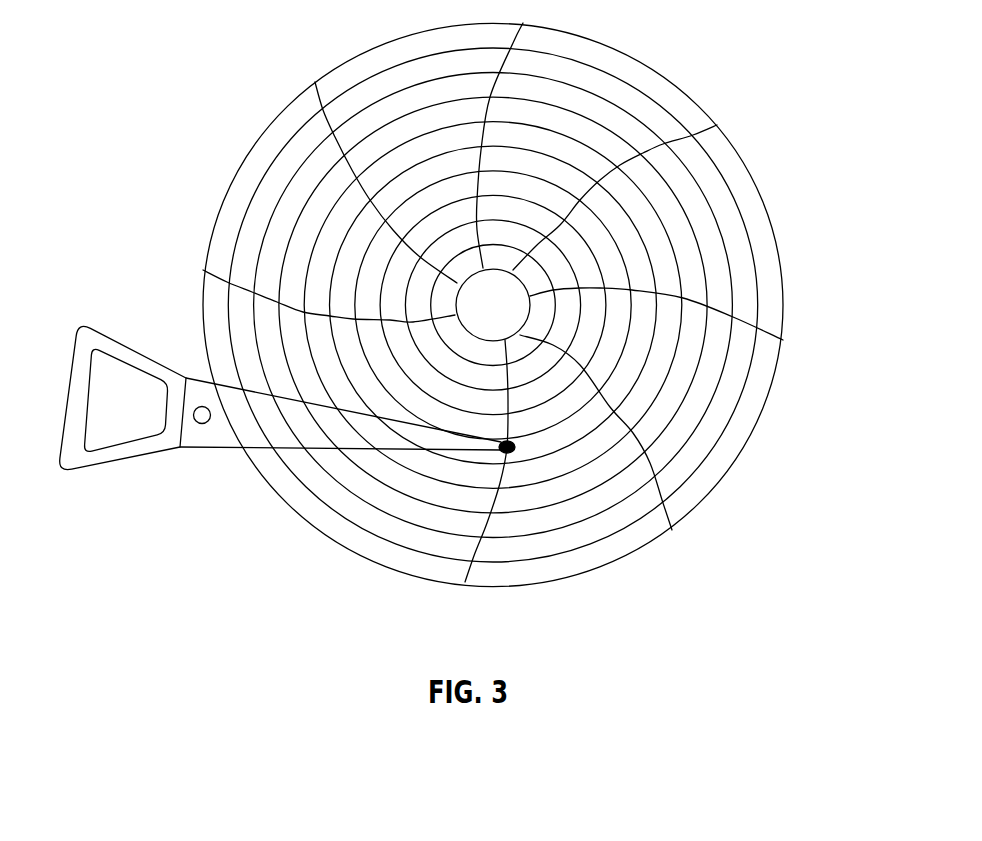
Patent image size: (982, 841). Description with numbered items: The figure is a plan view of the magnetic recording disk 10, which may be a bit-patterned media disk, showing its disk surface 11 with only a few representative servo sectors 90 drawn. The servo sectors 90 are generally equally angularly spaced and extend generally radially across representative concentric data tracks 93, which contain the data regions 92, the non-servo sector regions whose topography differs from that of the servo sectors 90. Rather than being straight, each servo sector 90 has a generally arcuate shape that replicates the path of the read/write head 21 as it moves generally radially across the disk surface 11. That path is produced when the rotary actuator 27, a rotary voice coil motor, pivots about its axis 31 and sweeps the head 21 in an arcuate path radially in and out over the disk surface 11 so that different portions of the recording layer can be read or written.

The magnetic recording disk 10 is at (790, 290).
The disk surface 11 is at (780, 228).
The read/write head 21 is at (507, 447).
The rotary actuator 27 is at (135, 345).
The axis 31 is at (202, 424).
The servo sectors 90 is at (717, 125).
The data regions 92 is at (578, 72).
The data tracks 93 is at (725, 377).